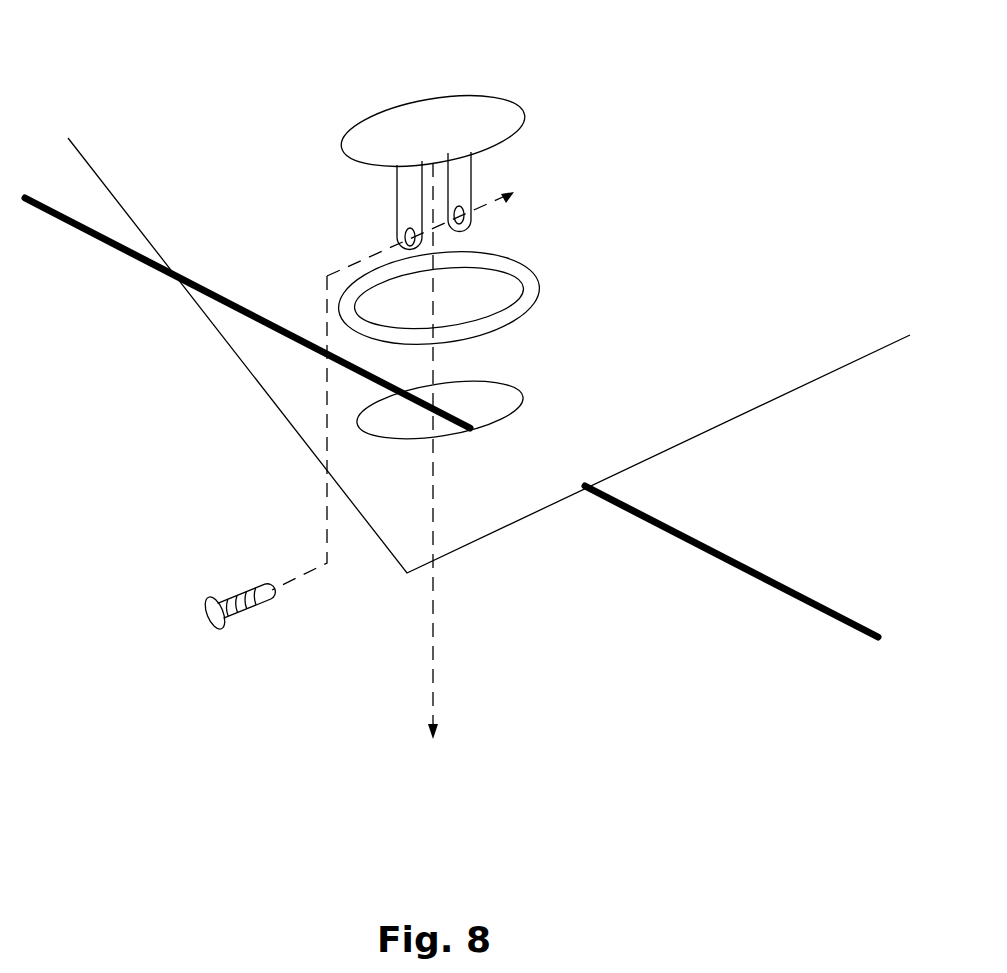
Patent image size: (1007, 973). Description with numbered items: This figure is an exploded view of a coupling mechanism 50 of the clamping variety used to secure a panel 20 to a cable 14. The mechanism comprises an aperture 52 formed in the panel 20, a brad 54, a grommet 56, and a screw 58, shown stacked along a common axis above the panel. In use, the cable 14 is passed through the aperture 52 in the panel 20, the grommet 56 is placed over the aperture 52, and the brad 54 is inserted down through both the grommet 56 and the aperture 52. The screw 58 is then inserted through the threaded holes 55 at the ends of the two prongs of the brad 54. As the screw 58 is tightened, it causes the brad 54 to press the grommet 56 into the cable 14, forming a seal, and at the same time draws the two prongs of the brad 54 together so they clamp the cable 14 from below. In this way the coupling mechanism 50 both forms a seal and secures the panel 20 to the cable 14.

The coupling mechanism 50 is at (320, 56).
The brad 54 is at (373, 145).
The threaded holes 55 is at (409, 228).
The grommet 56 is at (512, 265).
The aperture 52 is at (498, 398).
The screw 58 is at (237, 593).
The panel 20 is at (482, 505).
The cable 14 is at (683, 532).